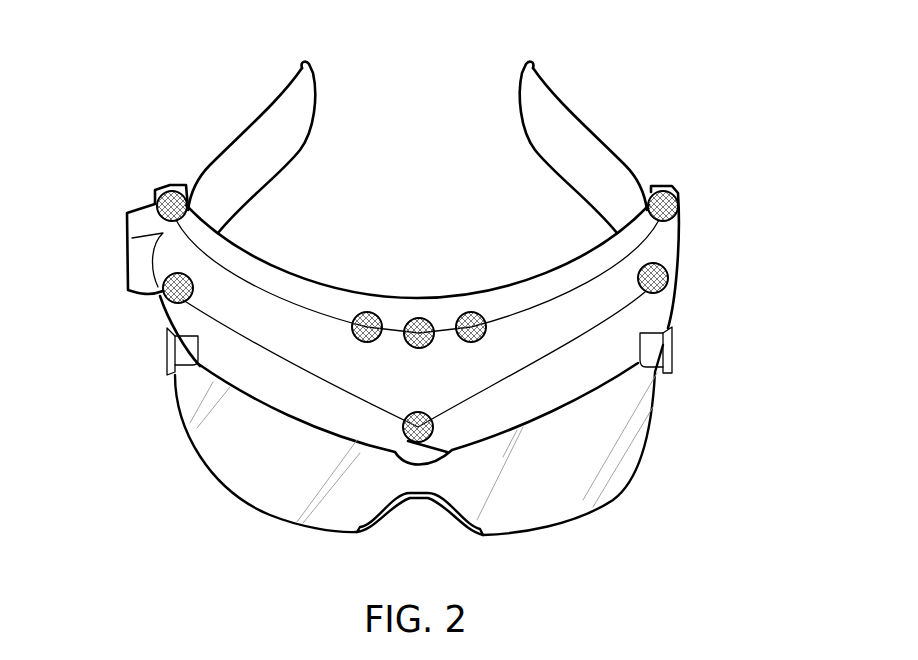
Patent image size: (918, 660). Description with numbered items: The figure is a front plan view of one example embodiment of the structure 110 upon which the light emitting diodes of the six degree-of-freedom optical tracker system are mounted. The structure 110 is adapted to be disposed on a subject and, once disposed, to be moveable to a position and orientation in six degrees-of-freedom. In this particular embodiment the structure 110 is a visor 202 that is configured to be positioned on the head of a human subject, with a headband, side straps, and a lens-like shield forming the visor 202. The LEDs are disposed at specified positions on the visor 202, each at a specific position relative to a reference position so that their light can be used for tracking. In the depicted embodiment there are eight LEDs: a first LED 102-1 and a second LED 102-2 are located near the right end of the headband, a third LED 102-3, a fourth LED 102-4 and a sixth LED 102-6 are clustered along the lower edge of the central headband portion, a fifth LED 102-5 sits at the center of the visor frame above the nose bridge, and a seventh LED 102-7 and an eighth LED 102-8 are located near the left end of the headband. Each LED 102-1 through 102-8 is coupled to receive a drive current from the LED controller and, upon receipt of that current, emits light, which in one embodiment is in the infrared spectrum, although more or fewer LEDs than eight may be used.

The structure 110 is at (667, 100).
The visor 202 is at (255, 382).
The light emitting diode 102-1 is at (663, 191).
The light emitting diode 102-2 is at (668, 278).
The light emitting diode 102-3 is at (473, 312).
The light emitting diode 102-4 is at (419, 318).
The light emitting diode 102-5 is at (420, 412).
The light emitting diode 102-6 is at (367, 312).
The light emitting diode 102-7 is at (164, 290).
The light emitting diode 102-8 is at (168, 192).